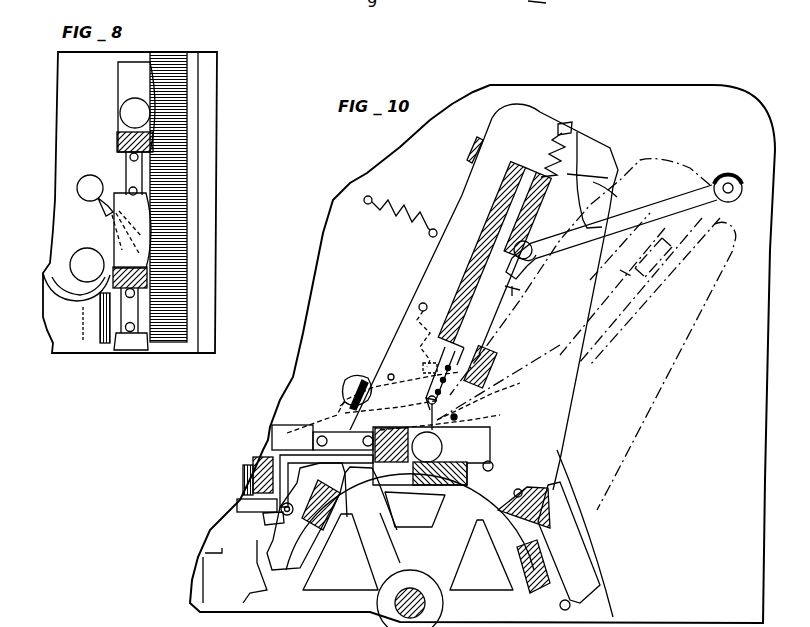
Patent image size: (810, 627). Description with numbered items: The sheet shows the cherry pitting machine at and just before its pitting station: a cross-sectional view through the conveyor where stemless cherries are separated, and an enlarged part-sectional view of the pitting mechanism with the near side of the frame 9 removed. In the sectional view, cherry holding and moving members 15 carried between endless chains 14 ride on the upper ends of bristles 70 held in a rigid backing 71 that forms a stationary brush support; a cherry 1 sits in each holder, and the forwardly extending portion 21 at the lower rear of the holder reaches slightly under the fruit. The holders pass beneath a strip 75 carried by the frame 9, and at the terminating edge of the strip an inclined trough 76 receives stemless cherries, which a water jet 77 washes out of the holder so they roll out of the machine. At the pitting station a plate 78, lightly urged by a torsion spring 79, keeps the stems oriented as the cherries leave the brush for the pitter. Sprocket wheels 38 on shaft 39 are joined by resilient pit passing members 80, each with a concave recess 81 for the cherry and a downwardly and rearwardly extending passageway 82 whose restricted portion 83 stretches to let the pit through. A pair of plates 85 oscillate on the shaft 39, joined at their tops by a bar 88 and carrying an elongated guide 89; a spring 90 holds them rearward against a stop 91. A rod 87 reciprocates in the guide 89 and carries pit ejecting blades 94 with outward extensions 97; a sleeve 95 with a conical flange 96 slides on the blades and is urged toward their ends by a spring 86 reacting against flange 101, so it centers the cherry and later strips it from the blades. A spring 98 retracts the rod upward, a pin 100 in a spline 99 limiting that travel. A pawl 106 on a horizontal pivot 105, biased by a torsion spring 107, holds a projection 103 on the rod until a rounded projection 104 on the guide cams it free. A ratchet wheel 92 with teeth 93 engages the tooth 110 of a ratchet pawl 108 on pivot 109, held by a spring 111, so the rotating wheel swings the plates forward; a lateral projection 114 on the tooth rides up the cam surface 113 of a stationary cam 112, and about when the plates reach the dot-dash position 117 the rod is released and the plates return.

In FIG. 8, the cherry 1 is at (123, 115).
In FIG. 10, the frame 9 is at (352, 262).
In FIG. 8, the endless chains 14 is at (128, 168).
In FIG. 10, the endless chains 14 is at (563, 615).
In FIG. 8, the cherry holding and moving members 15 is at (118, 78).
In FIG. 10, the cherry holding and moving members 15 is at (578, 540).
In FIG. 10, the forwardly extending portion of rear wall 21 is at (390, 462).
In FIG. 10, the sprocket wheels 38 is at (337, 609).
In FIG. 10, the shaft 39 is at (417, 602).
In FIG. 8, the bristles 70 is at (173, 200).
In FIG. 10, the bristles 70 is at (247, 477).
In FIG. 8, the rigid backing 71 is at (190, 248).
In FIG. 10, the rigid backing 71 is at (240, 502).
In FIG. 8, the strip 75 is at (83, 340).
In FIG. 8, the inclined trough 76 is at (47, 280).
In FIG. 8, the water jet 77 is at (77, 187).
In FIG. 10, the plate 78 is at (273, 473).
In FIG. 10, the torsion spring 79 is at (283, 520).
In FIG. 10, the pit passing members 80 is at (310, 547).
In FIG. 10, the concave recess 81 is at (437, 473).
In FIG. 10, the passageway 82 is at (417, 473).
In FIG. 10, the restricted portion 83 is at (375, 472).
In FIG. 10, the plates 85 is at (570, 175).
In FIG. 10, the spring 86 is at (490, 358).
In FIG. 10, the rod 87 is at (490, 323).
In FIG. 10, the bar 88 is at (570, 125).
In FIG. 10, the guide 89 is at (511, 205).
In FIG. 10, the spring 90 is at (410, 213).
In FIG. 10, the stop 91 is at (477, 138).
In FIG. 10, the ratchet wheel 92 is at (213, 583).
In FIG. 10, the teeth 93 is at (340, 410).
In FIG. 10, the pit ejecting blades 94 is at (438, 347).
In FIG. 10, the sleeve 95 is at (462, 410).
In FIG. 10, the flange 96 is at (457, 418).
In FIG. 10, the radially outward extensions 97 is at (434, 408).
In FIG. 10, the spring 98 is at (553, 143).
In FIG. 10, the spline 99 is at (537, 205).
In FIG. 10, the pin 100 is at (529, 243).
In FIG. 10, the flange 101 is at (452, 396).
In FIG. 10, the projection 103 is at (515, 295).
In FIG. 10, the convexly rounded forward projection 104 is at (513, 243).
In FIG. 10, the horizontal pivot 105 is at (737, 193).
In FIG. 10, the pawl 106 is at (520, 282).
In FIG. 10, the torsion spring 107 is at (713, 177).
In FIG. 10, the ratchet pawl 108 is at (365, 378).
In FIG. 10, the pivot 109 is at (391, 374).
In FIG. 10, the tooth 110 is at (347, 388).
In FIG. 10, the spring 111 is at (420, 312).
In FIG. 10, the stationary cam 112 is at (313, 433).
In FIG. 10, the cam surface 113 is at (366, 380).
In FIG. 10, the lateral projection 114 is at (343, 397).
In FIG. 10, the dot-dash position 117 is at (561, 422).